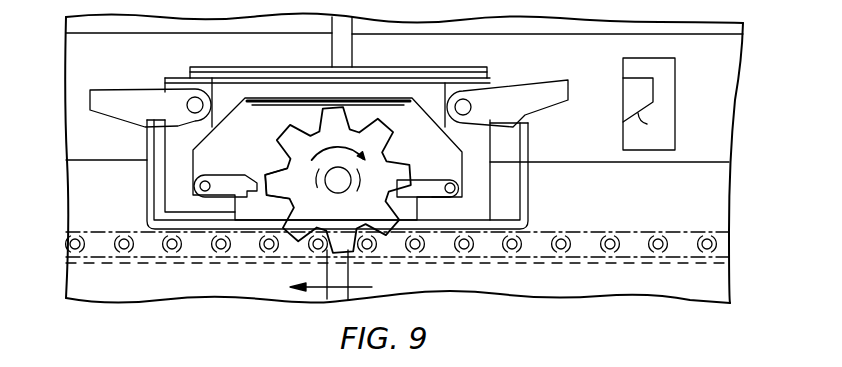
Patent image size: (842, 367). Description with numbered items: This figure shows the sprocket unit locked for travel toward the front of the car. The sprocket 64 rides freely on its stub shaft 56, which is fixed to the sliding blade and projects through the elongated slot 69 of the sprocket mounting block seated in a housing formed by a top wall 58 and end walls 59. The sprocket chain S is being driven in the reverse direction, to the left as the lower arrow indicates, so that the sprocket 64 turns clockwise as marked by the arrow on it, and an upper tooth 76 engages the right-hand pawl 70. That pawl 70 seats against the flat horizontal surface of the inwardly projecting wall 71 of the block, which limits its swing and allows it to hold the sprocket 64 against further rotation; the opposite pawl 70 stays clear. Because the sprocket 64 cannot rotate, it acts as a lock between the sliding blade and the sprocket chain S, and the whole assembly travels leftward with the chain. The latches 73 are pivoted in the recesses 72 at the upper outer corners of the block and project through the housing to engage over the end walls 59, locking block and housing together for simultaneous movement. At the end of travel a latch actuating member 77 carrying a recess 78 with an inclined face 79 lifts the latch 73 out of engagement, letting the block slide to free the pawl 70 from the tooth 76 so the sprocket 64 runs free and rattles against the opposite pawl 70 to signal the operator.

The sprocket chain S is at (148, 243).
The stub shaft 56 is at (345, 178).
The top wall 58 is at (424, 73).
The end wall 59 is at (148, 183).
The sprocket 64 is at (346, 230).
The elongated slot 69 is at (286, 192).
The pawl 70 is at (228, 180).
The inwardly projecting wall 71 is at (432, 198).
The recess 72 is at (178, 123).
The latch 73 is at (127, 97).
The sprocket tooth 76 is at (382, 130).
The latch actuating member 77 is at (668, 96).
The recess 78 is at (635, 88).
The inclined face 79 is at (647, 124).